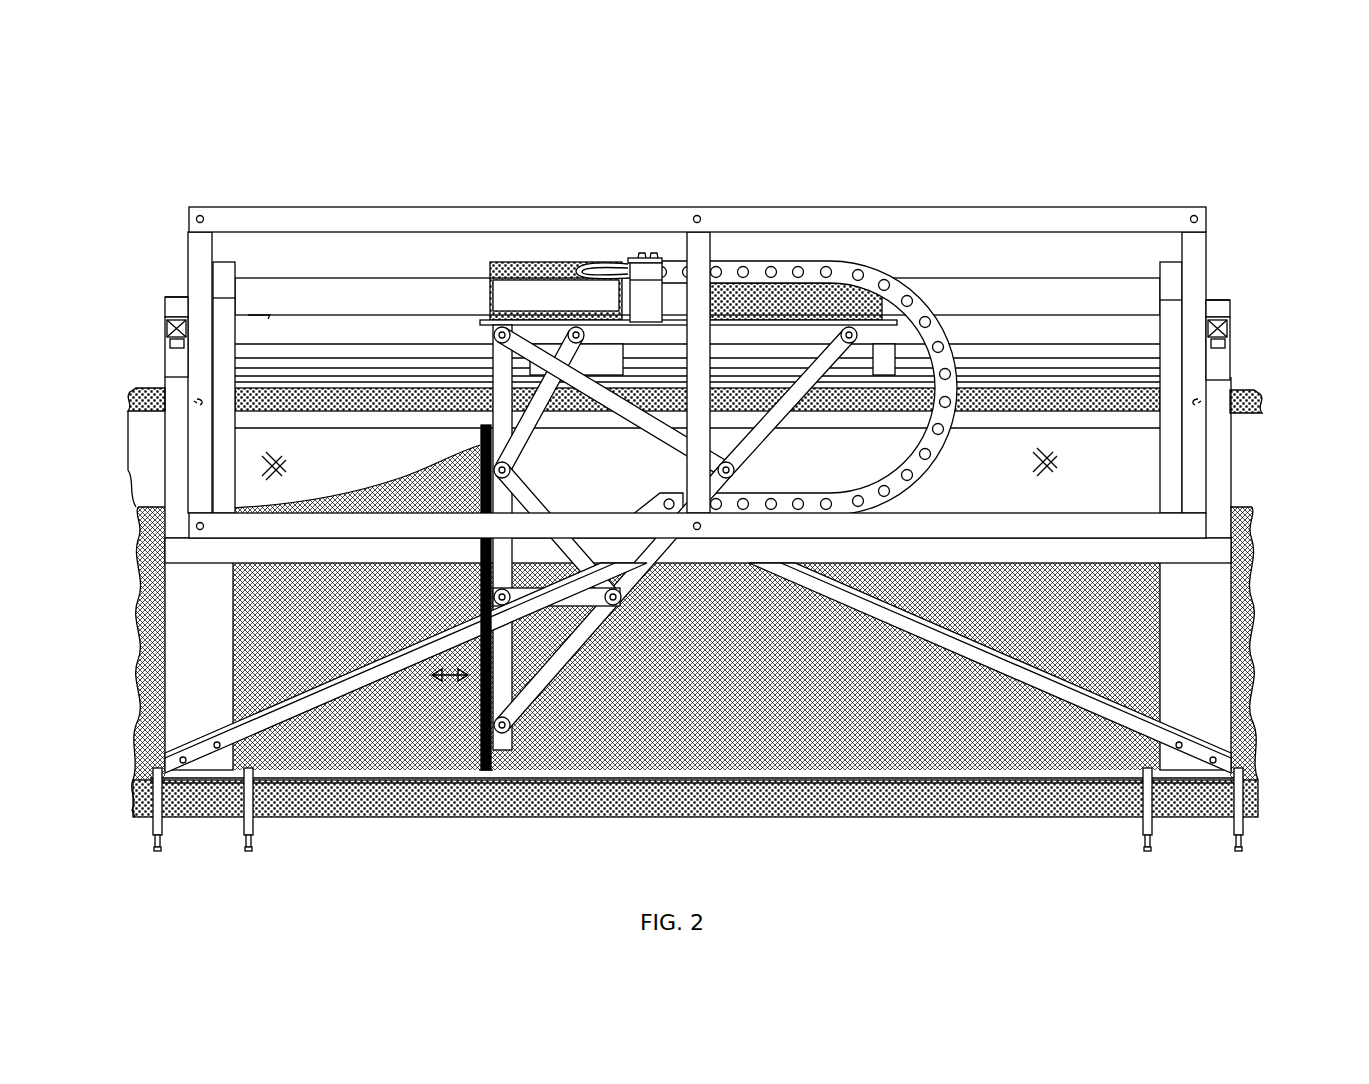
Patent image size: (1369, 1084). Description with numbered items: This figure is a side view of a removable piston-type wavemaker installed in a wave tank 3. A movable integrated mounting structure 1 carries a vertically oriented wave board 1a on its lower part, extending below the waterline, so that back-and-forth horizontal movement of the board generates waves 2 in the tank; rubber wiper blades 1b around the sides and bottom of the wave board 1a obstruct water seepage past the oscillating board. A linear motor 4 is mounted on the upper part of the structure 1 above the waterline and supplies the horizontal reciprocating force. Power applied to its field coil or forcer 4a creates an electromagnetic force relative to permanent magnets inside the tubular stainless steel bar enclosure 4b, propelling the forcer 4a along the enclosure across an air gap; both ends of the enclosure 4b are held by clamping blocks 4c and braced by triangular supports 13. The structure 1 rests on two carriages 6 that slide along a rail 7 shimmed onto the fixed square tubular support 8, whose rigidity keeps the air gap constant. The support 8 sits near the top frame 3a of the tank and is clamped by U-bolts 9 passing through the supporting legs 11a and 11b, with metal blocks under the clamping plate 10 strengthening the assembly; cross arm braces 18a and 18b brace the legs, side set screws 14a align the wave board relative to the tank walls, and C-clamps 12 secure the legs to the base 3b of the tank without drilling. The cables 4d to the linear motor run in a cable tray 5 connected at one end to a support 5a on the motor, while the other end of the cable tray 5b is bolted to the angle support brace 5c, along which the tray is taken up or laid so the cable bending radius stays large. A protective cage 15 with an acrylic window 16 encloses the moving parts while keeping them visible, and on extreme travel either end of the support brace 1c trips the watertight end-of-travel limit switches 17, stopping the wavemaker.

The movable integrated mounting structure 1 is at (588, 657).
The wave board 1a is at (478, 690).
The rubber wiper blades 1b is at (490, 775).
The support brace 1c is at (905, 300).
The waves 2 is at (445, 468).
The wave tank 3 is at (112, 583).
The top frame 3a is at (122, 402).
The base 3b is at (148, 800).
The linear motor 4 is at (558, 256).
The field coil (forcer) 4a is at (755, 260).
The tubular stainless steel bar enclosure 4b is at (1010, 300).
The clamping blocks 4c is at (232, 270).
The cables to the linear motor 4d is at (612, 262).
The cable tray 5 is at (818, 250).
The support 5a is at (665, 260).
The other end of the cable tray 5b is at (640, 510).
The angle support brace 5c is at (645, 548).
The carriages 6 is at (545, 346).
The rail 7 is at (1045, 375).
The square tubular support 8 is at (1030, 428).
The U-bolts 9 is at (172, 335).
The metal clamping plate 10 is at (172, 360).
The supporting leg 11a is at (203, 697).
The supporting leg 11b is at (1195, 697).
The C-clamps 12 is at (162, 835).
The triangular supports 13 is at (176, 318).
The side set screws 14a is at (192, 402).
The protective cage 15 is at (1040, 528).
The acrylic window 16 is at (1052, 470).
The end-of-travel limit switches 17 is at (178, 298).
The cross arm brace 18a is at (385, 668).
The cross arm brace 18b is at (1005, 668).